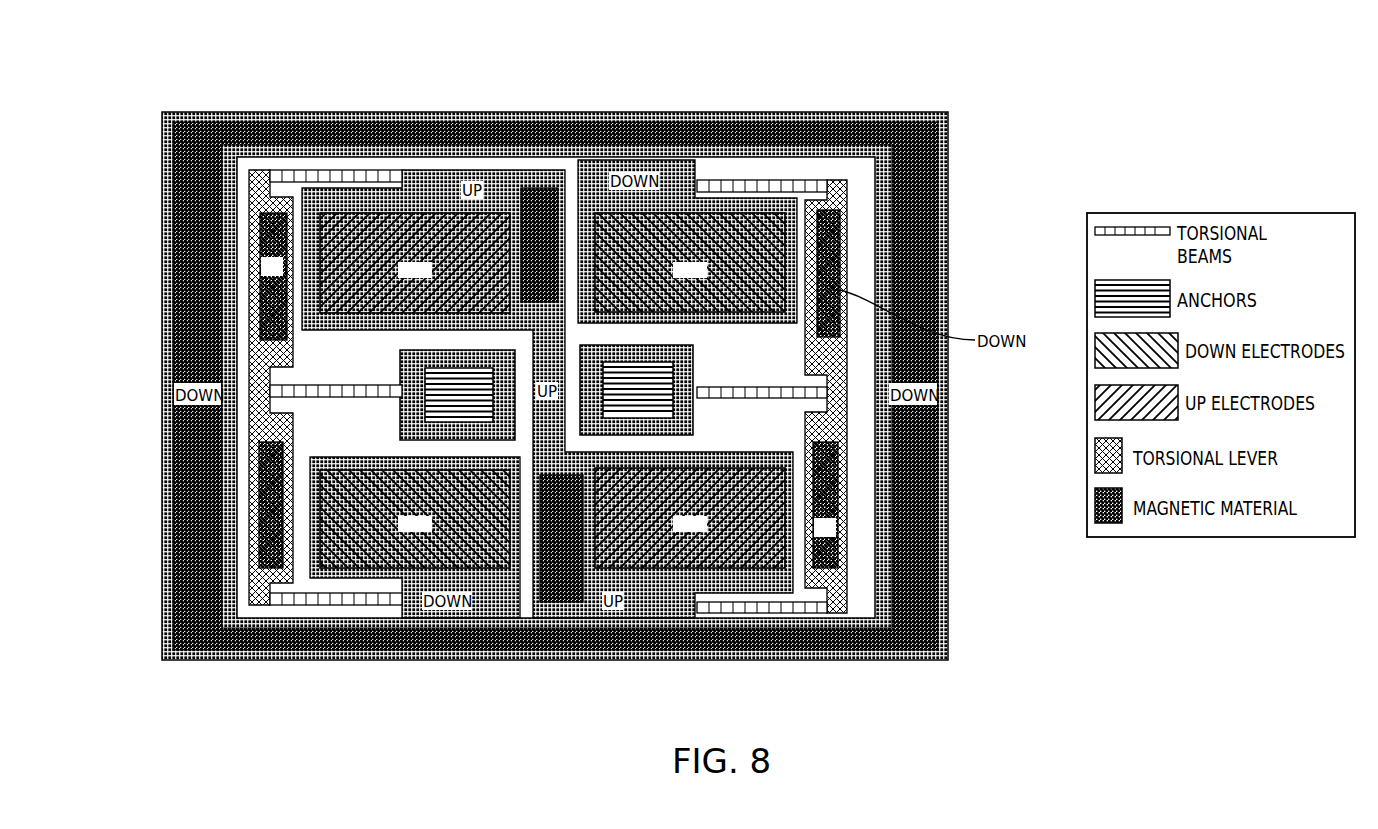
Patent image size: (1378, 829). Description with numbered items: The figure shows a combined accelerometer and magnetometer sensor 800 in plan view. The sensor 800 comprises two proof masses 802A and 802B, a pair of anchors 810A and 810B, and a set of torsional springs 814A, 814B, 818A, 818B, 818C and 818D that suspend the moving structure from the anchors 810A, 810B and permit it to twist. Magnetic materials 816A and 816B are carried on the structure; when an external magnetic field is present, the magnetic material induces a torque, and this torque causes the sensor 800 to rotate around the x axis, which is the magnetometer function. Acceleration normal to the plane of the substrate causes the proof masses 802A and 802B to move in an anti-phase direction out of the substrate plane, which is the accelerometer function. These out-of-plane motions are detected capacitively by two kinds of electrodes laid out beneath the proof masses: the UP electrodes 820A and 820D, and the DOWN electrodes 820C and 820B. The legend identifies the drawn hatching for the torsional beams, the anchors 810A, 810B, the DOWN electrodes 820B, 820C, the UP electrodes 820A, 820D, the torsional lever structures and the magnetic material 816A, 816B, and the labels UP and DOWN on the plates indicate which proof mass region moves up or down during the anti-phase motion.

The combined accelerometer and magnetometer sensor 800 is at (960, 100).
The proof mass 802A is at (170, 225).
The proof mass 802B is at (427, 173).
The anchor 810A is at (405, 418).
The anchor 810B is at (688, 405).
The torsional spring 814A is at (330, 384).
The torsional spring 814B is at (760, 386).
The magnetic material 816A is at (255, 565).
The magnetic material 816B is at (838, 450).
The torsional spring 818A is at (302, 176).
The torsional spring 818B is at (735, 183).
The torsional spring 818C is at (335, 600).
The torsional spring 818D is at (760, 608).
The UP electrode C21 820A is at (357, 313).
The DOWN electrode C12 820B is at (707, 312).
The DOWN electrode C11 820C is at (327, 472).
The UP electrode C22 820D is at (765, 476).